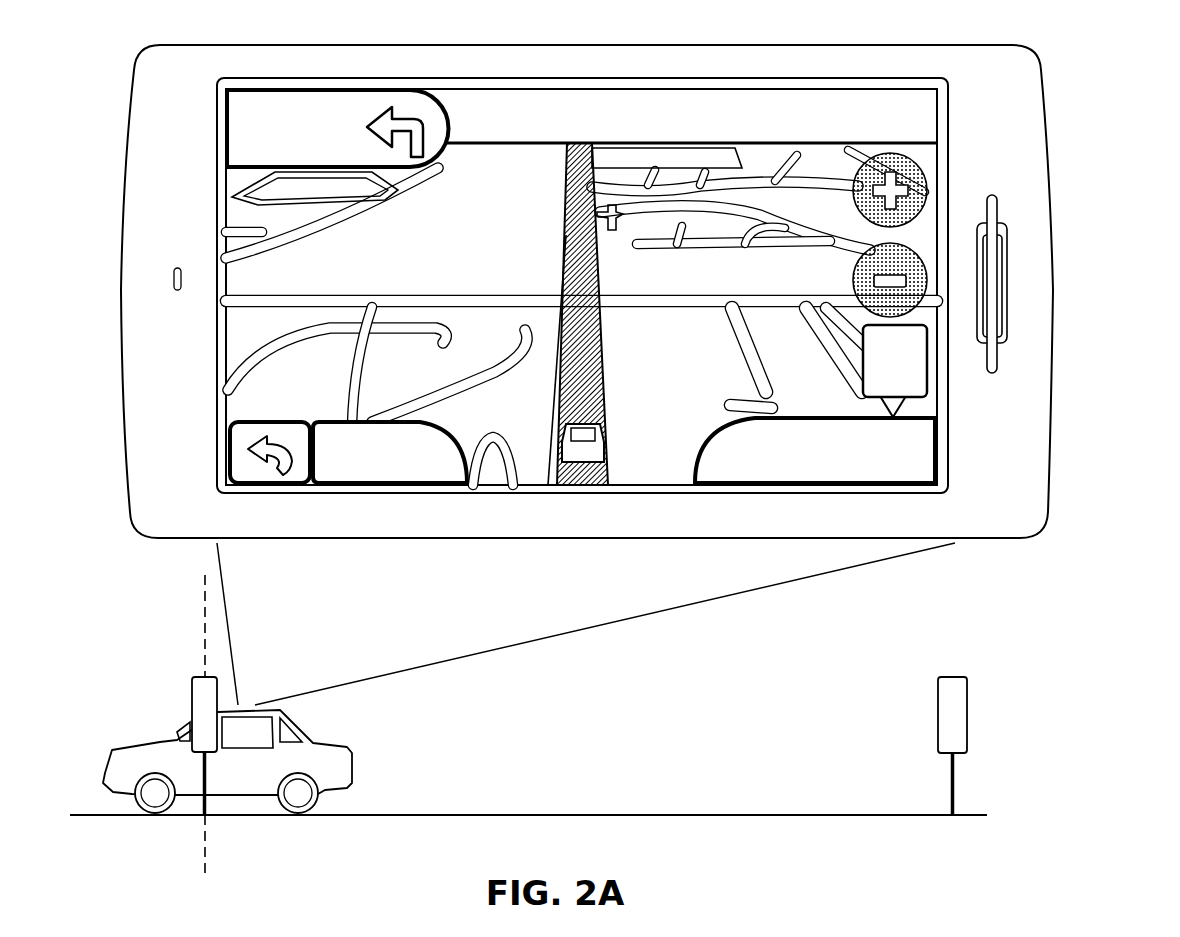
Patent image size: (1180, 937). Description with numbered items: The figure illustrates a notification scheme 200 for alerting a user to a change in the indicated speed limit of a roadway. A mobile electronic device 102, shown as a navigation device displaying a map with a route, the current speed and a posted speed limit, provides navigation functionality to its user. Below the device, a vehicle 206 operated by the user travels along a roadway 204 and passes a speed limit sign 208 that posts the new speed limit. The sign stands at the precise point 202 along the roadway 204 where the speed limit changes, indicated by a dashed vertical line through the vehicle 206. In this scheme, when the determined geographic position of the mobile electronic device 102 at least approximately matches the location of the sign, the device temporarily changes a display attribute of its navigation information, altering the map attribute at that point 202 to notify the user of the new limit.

The notification scheme 200 is at (625, 467).
The mobile electronic device 102 is at (1043, 245).
The point 202 is at (207, 850).
The roadway 204 is at (968, 817).
The vehicle 206 is at (342, 748).
The speed limit sign 208 is at (190, 692).